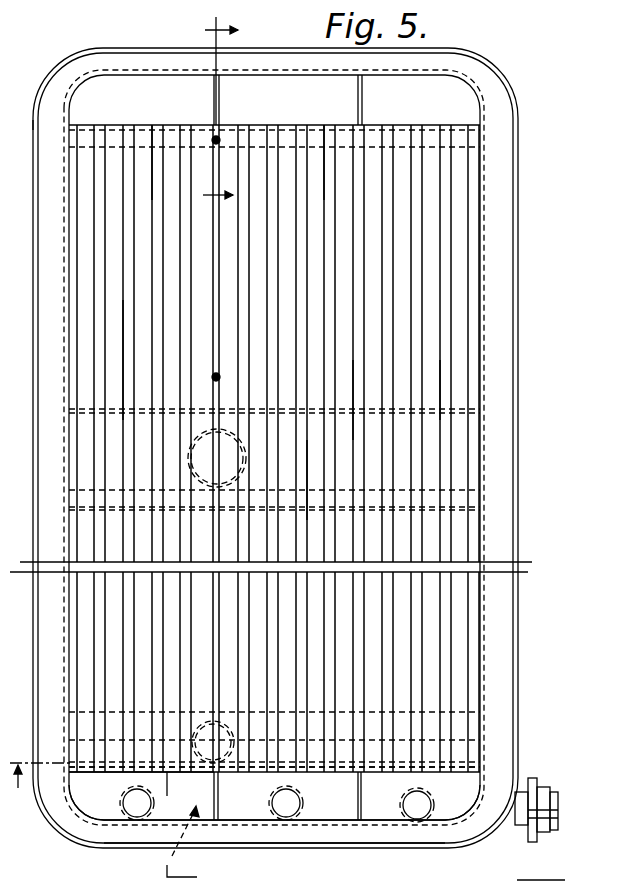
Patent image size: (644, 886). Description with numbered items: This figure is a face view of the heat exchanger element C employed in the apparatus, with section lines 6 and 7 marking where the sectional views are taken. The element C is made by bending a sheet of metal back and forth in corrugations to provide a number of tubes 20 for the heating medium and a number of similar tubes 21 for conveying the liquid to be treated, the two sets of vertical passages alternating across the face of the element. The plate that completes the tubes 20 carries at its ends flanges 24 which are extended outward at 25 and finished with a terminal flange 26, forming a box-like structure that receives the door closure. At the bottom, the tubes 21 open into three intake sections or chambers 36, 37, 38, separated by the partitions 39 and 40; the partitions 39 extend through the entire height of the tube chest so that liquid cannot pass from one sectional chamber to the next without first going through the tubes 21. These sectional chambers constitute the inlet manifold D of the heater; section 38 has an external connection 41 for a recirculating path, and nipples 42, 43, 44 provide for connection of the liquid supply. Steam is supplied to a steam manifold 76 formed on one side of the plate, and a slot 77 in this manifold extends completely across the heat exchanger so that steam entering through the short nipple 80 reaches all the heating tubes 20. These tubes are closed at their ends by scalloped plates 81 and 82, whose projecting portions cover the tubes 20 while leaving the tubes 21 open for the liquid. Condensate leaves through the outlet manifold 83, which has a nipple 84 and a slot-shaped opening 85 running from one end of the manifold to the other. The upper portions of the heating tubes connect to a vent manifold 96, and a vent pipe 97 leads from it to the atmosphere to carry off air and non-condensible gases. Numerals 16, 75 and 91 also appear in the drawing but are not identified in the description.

The section line 6- 6 is at (220, 113).
The section line 7- 7 is at (36, 779).
The tube 16 is at (350, 410).
The tubes 20 is at (165, 357).
The tubes 21 is at (205, 302).
The flanges 24 is at (482, 553).
The outward extension 25 is at (213, 833).
The terminal flange 26 is at (33, 492).
The intake section 36 is at (97, 802).
The intake section 37 is at (345, 826).
The intake section 38 is at (445, 824).
The partition 39 is at (222, 100).
The partition 40 is at (364, 100).
The external connection 41 is at (532, 834).
The nipple 42 is at (127, 816).
The nipple 43 is at (283, 818).
The nipple 44 is at (415, 820).
The casing 75 is at (505, 488).
The steam manifold 76 is at (16, 74).
The slot 77 is at (312, 492).
The short nipple 80 is at (192, 446).
The scalloped plate 81 is at (148, 130).
The scalloped plate 82 is at (120, 772).
The outlet manifold 83 is at (432, 714).
The nipple 84 is at (205, 772).
The opening 85 is at (462, 746).
The spot 91 is at (220, 375).
The vent manifold 96 is at (322, 142).
The vent pipe 97 is at (224, 138).
The heat exchanger element C is at (462, 392).
The inlet manifold D is at (99, 795).